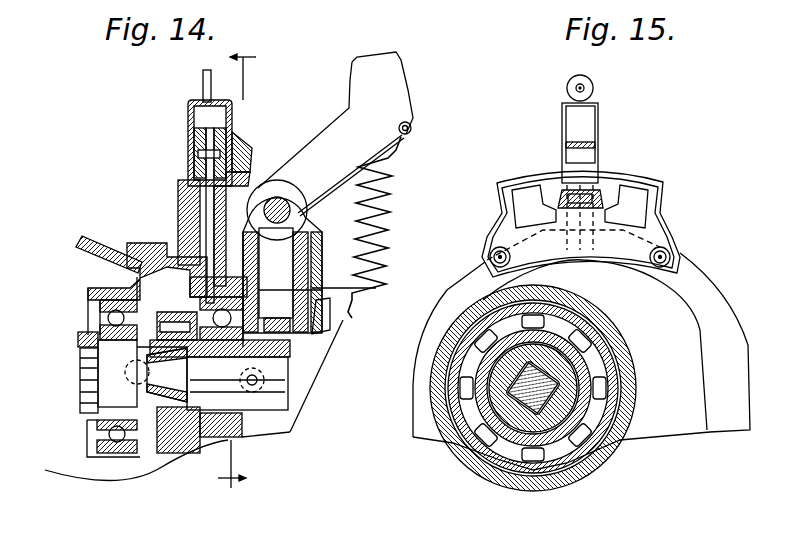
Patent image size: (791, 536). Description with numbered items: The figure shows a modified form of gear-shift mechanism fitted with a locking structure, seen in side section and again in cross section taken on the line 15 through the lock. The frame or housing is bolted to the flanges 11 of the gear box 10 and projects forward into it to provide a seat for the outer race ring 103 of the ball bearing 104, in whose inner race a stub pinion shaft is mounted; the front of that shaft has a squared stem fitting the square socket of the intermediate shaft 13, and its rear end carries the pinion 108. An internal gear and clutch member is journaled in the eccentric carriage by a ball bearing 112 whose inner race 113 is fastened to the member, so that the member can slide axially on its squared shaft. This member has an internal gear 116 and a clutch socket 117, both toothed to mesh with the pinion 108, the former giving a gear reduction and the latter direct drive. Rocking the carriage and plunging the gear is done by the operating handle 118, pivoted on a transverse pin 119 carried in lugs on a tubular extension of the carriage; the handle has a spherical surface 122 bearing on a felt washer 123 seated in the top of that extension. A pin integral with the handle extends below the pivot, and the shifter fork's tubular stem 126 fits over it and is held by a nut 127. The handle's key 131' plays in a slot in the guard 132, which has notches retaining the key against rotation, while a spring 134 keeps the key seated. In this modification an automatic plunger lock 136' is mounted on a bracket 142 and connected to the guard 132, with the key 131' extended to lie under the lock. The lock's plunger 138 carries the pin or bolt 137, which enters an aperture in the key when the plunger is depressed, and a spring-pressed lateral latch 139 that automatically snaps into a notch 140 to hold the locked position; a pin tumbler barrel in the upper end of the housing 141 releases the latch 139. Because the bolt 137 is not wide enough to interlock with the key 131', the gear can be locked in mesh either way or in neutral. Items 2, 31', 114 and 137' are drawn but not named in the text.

In FIG. 14, the frame 2 is at (62, 230).
In FIG. 14, the gear box 10 is at (118, 250).
In FIG. 14, the flanges 11 is at (134, 246).
In FIG. 14, the intermediate shaft 13 is at (84, 412).
In FIG. 14, the section line 15 is at (242, 271).
In FIG. 14, the wedge member 31' is at (248, 163).
In FIG. 14, the outer race ring 103 is at (92, 456).
In FIG. 14, the ball bearing 104 is at (97, 436).
In FIG. 14, the pinion 108 is at (140, 357).
In FIG. 15, the ball bearing 112 is at (452, 392).
In FIG. 15, the inner race 113 is at (468, 406).
In FIG. 15, the housing hub ring 114 is at (453, 370).
In FIG. 14, the internal gear 116 is at (172, 455).
In FIG. 14, the clutch socket 117 is at (218, 437).
In FIG. 14, the operating handle 118 is at (390, 108).
In FIG. 14, the transverse pin 119 is at (277, 196).
In FIG. 14, the spherical surface 122 is at (308, 213).
In FIG. 14, the felt washer 123 is at (306, 232).
In FIG. 14, the tubular stem 126 is at (357, 288).
In FIG. 14, the nut 127 is at (328, 328).
In FIG. 15, the key 131' is at (598, 175).
In FIG. 14, the guard 132 is at (238, 145).
In FIG. 15, the guard 132 is at (645, 182).
In FIG. 14, the spring 134 is at (394, 202).
In FIG. 15, the automatic plunger lock 136' is at (606, 124).
In FIG. 14, the bolt 137 is at (183, 215).
In FIG. 14, the plunger pin 137' is at (190, 86).
In FIG. 15, the plunger pin 137' is at (593, 80).
In FIG. 14, the plunger 138 is at (194, 134).
In FIG. 14, the bolt or latch 139 is at (196, 146).
In FIG. 14, the notch 140 is at (198, 160).
In FIG. 14, the housing 141 is at (189, 110).
In FIG. 15, the housing 141 is at (598, 126).
In FIG. 14, the bracket 142 is at (180, 192).